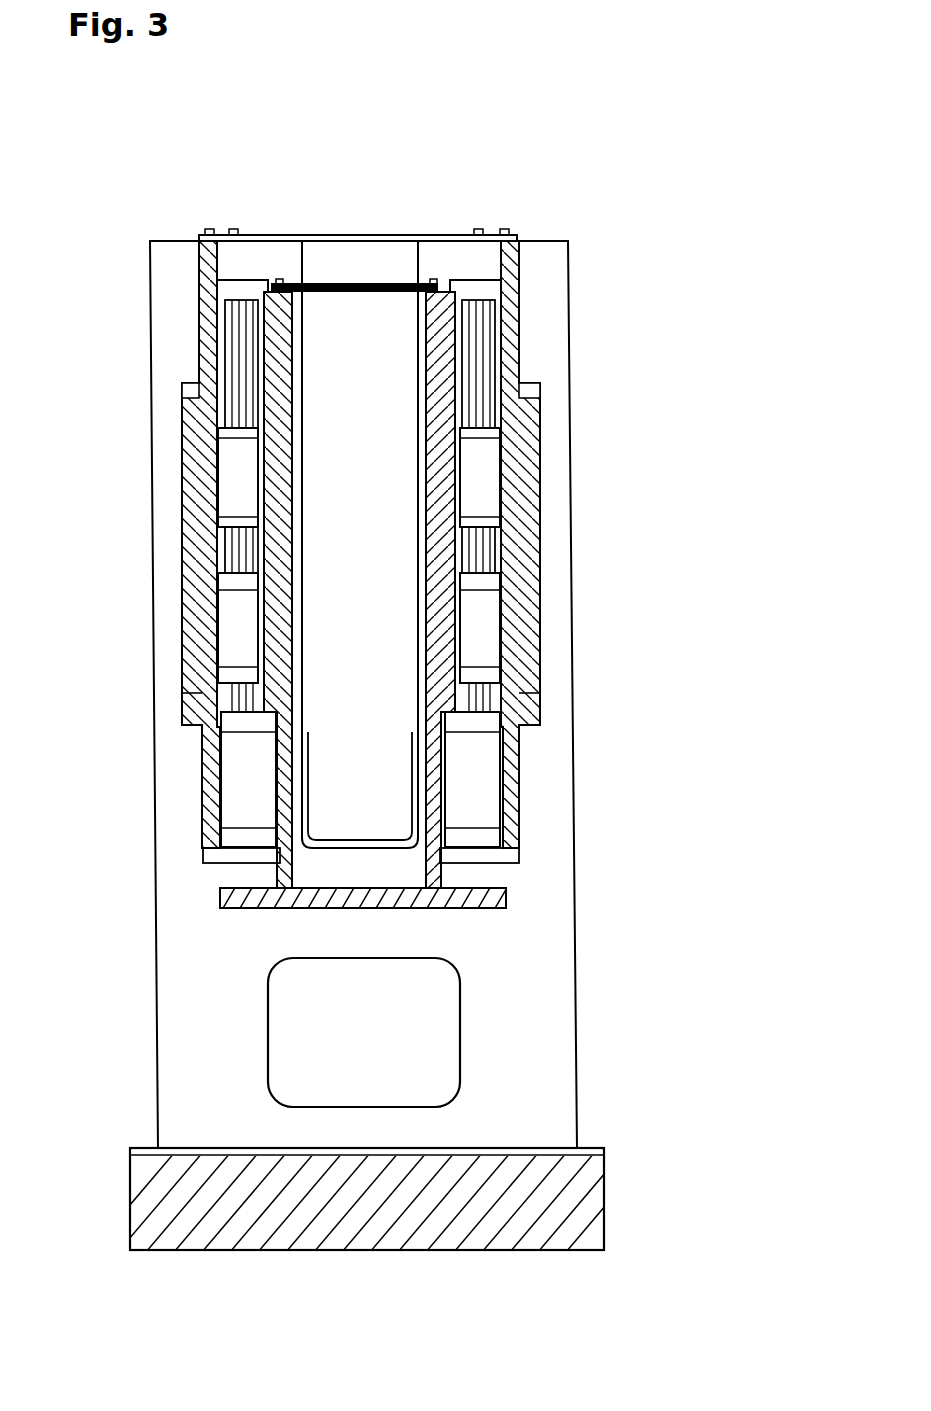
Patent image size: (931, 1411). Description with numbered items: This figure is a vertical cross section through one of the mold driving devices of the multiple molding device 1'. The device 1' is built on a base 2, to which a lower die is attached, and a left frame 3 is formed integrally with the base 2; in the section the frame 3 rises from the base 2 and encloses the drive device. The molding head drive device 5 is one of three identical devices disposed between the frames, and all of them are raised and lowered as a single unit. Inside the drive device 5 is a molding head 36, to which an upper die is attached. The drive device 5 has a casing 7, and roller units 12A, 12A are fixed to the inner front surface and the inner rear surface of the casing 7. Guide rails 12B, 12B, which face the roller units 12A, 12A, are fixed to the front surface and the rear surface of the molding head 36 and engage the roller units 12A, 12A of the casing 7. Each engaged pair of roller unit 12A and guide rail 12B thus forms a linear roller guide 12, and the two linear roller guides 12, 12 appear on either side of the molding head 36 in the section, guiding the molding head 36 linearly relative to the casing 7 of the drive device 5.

The multiple molding device 1' is at (609, 69).
The base 2 is at (137, 1187).
The left frame 3 is at (150, 320).
The molding head drive device 5 is at (364, 200).
The casing 7 is at (517, 287).
The linear roller guide 12 is at (361, 573).
The roller unit 12A is at (230, 473).
The guide rail 12B is at (228, 401).
The molding head 36 is at (238, 901).